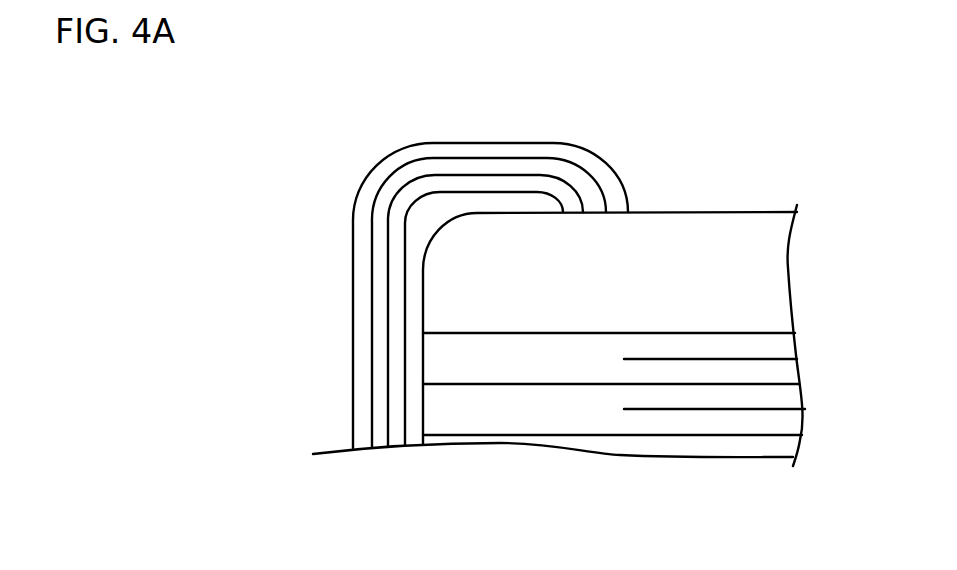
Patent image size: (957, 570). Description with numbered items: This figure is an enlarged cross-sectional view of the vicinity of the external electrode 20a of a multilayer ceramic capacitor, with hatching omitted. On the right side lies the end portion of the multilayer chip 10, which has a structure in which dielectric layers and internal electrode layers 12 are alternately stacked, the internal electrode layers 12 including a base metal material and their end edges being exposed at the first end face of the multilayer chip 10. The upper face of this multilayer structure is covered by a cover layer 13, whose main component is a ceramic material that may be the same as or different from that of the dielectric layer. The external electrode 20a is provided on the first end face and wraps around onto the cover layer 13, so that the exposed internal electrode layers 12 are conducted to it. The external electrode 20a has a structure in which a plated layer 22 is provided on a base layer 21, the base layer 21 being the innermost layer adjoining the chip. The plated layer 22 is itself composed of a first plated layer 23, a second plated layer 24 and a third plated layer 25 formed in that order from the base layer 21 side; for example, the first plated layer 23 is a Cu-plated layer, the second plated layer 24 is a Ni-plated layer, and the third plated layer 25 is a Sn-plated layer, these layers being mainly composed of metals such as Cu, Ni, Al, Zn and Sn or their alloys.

The multilayer chip 10 is at (778, 203).
The internal electrode layers 12 is at (568, 438).
The cover layers 13 is at (722, 250).
The external electrode 20a is at (480, 130).
The base layer 21 is at (415, 354).
The plated layer 22 is at (222, 145).
The first plated layer 23 is at (398, 293).
The second plated layer 24 is at (380, 242).
The third plated layer 25 is at (368, 197).